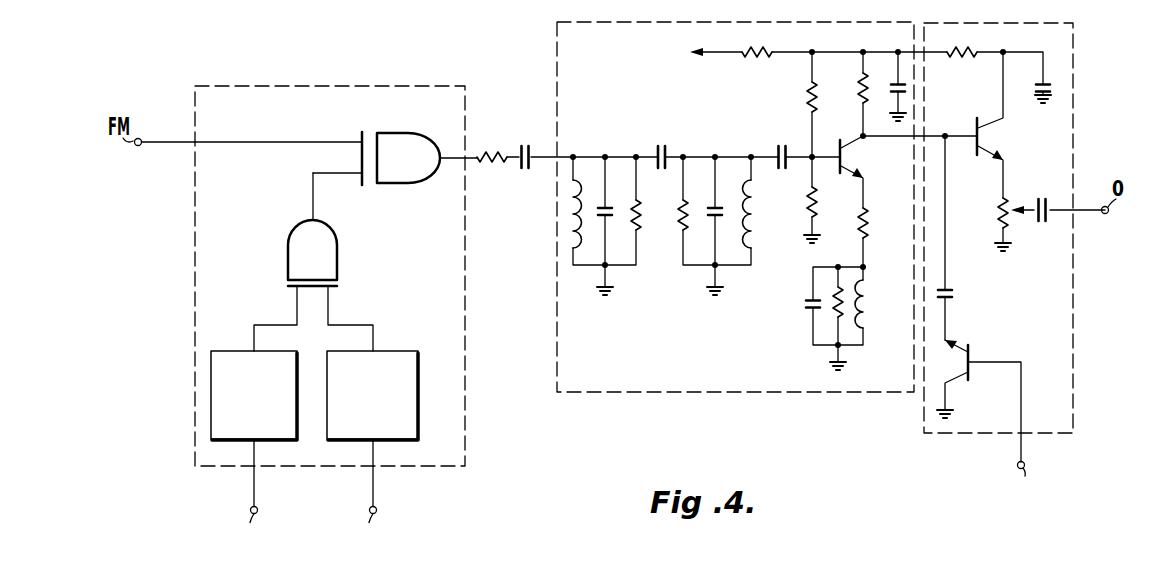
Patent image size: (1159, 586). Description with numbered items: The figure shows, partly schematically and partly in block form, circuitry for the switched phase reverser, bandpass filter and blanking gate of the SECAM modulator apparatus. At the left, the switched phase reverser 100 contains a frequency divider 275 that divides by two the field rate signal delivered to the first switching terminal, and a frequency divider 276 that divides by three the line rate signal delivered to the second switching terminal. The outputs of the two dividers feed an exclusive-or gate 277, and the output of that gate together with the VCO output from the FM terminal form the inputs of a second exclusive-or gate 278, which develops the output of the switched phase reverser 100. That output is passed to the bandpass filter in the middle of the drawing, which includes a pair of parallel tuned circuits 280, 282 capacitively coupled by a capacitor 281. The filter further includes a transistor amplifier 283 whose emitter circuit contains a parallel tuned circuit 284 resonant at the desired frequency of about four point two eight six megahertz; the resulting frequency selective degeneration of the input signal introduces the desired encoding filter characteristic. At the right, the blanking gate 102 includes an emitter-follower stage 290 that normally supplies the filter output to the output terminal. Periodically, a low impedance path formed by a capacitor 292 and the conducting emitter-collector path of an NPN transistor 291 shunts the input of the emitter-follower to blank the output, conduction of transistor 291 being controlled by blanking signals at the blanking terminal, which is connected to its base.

The switched phase reverser 100 is at (465, 432).
The blanking gate 102 is at (1073, 377).
The frequency divider 275 is at (230, 349).
The frequency divider 276 is at (396, 350).
The exclusive-or gate 277 is at (339, 258).
The exclusive-or gate 278 is at (410, 183).
The parallel tuned circuit 280 is at (630, 144).
The capacitor 281 is at (677, 144).
The parallel tuned circuit 282 is at (730, 144).
The transistor amplifier 283 is at (857, 84).
The parallel tuned circuit 284 is at (907, 309).
The emitter-follower stage 290 is at (982, 105).
The NPN transistor 291 is at (970, 348).
The capacitor 292 is at (955, 290).